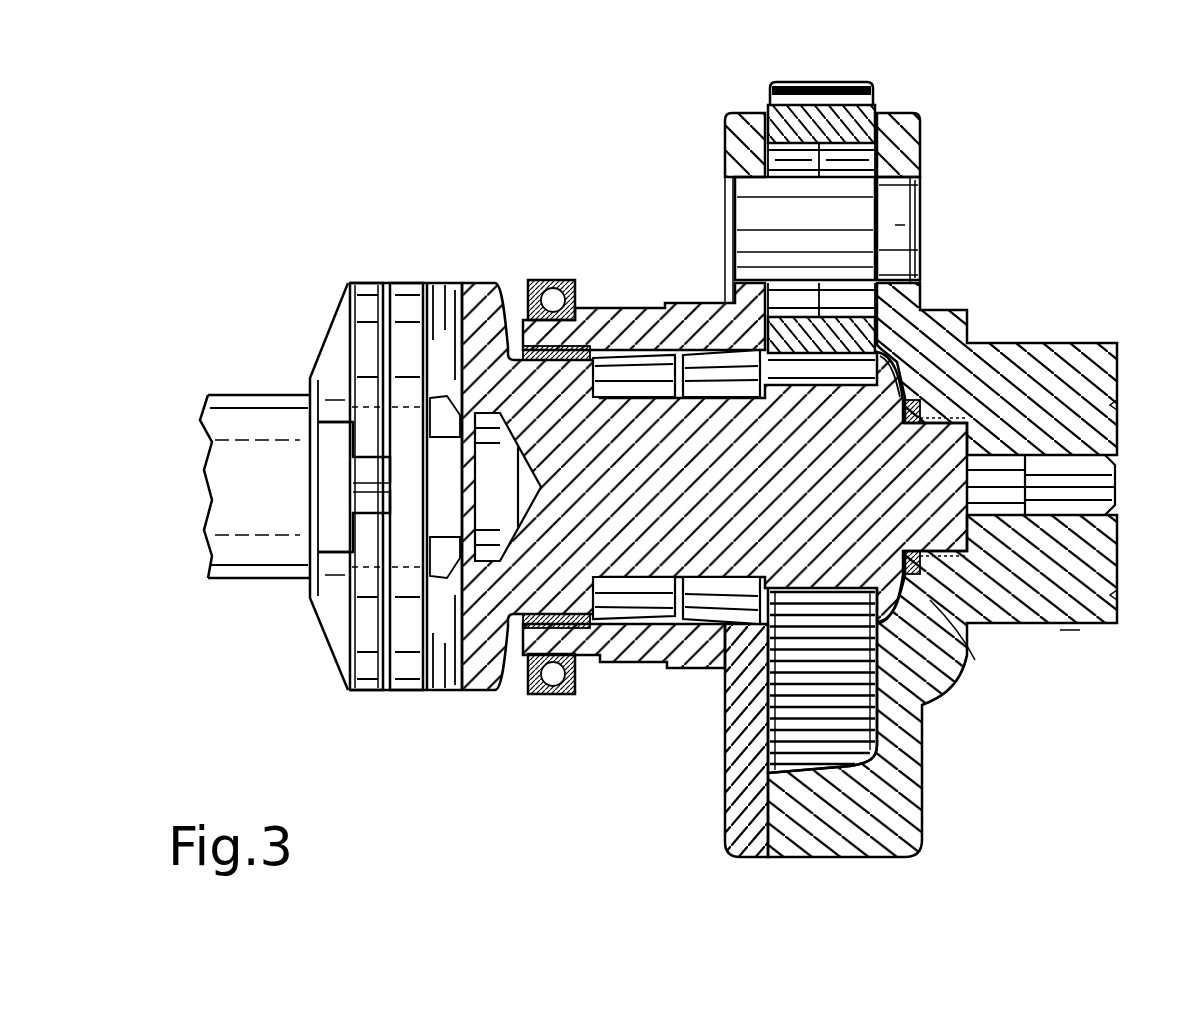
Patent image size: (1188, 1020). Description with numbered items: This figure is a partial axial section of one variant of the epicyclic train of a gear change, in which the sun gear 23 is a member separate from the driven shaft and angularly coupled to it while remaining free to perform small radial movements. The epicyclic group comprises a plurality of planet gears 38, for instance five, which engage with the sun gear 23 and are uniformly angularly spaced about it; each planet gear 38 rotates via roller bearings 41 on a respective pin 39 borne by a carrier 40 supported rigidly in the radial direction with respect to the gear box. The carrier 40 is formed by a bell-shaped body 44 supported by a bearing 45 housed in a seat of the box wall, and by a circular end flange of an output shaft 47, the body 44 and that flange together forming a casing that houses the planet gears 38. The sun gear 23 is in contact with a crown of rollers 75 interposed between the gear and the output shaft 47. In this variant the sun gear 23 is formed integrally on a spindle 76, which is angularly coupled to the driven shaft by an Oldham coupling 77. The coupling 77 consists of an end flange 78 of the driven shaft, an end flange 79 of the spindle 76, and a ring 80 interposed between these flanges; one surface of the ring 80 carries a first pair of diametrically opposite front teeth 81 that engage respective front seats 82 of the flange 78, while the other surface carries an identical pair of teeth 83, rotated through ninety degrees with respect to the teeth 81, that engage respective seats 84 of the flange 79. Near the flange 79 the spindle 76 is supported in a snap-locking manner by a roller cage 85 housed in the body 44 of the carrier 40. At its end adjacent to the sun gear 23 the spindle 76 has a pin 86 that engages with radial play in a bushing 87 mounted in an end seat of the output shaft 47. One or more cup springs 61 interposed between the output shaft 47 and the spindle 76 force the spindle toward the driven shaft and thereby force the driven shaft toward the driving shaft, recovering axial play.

The sun gear 23 is at (882, 403).
The planet gears 38 is at (830, 120).
The pins 39 is at (860, 222).
The carrier 40 is at (928, 856).
The roller bearings 41 is at (778, 108).
The bell-shaped body 44 is at (690, 656).
The bearing 45 is at (553, 280).
The output shaft 47 is at (1062, 405).
The cup springs 61 is at (990, 590).
The crown of rollers 75 is at (955, 640).
The spindle 76 is at (632, 580).
The Oldham coupling 77 is at (410, 272).
The end flange 78 is at (357, 622).
The end flange 79 is at (480, 690).
The ring 80 is at (398, 690).
The front teeth 81 is at (373, 482).
The front seats 82 is at (310, 592).
The teeth 83 is at (446, 283).
The seats 84 is at (458, 372).
The roller cage 85 is at (593, 345).
The pin 86 is at (1040, 480).
The bushing 87 is at (1040, 600).